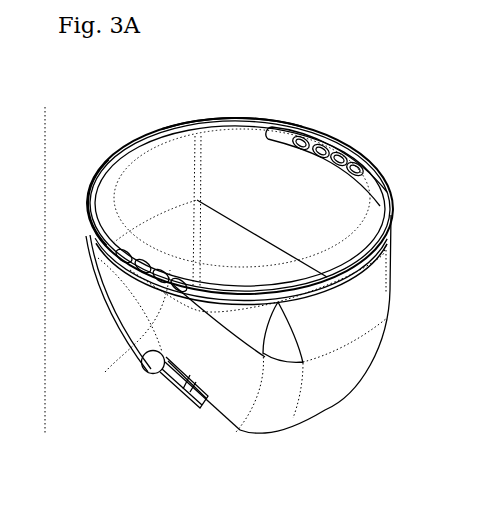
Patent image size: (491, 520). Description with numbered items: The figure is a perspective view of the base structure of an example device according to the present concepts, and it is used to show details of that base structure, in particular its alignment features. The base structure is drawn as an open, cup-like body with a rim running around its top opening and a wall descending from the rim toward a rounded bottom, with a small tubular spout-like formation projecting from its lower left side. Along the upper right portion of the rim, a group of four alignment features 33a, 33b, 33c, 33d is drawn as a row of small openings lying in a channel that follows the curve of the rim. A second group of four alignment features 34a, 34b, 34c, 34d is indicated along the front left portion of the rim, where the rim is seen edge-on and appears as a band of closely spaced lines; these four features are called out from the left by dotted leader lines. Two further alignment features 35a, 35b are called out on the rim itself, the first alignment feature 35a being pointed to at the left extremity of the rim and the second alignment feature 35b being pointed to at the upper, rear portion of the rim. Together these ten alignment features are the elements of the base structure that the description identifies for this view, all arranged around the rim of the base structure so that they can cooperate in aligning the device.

The alignment feature 33a is at (307, 123).
The alignment feature 33b is at (332, 133).
The alignment feature 33c is at (365, 153).
The alignment feature 33d is at (382, 167).
The alignment feature 34a is at (97, 253).
The alignment feature 34b is at (103, 285).
The alignment feature 34c is at (108, 320).
The alignment feature 34d is at (112, 362).
The alignment feature 35a is at (87, 182).
The alignment feature 35b is at (227, 117).